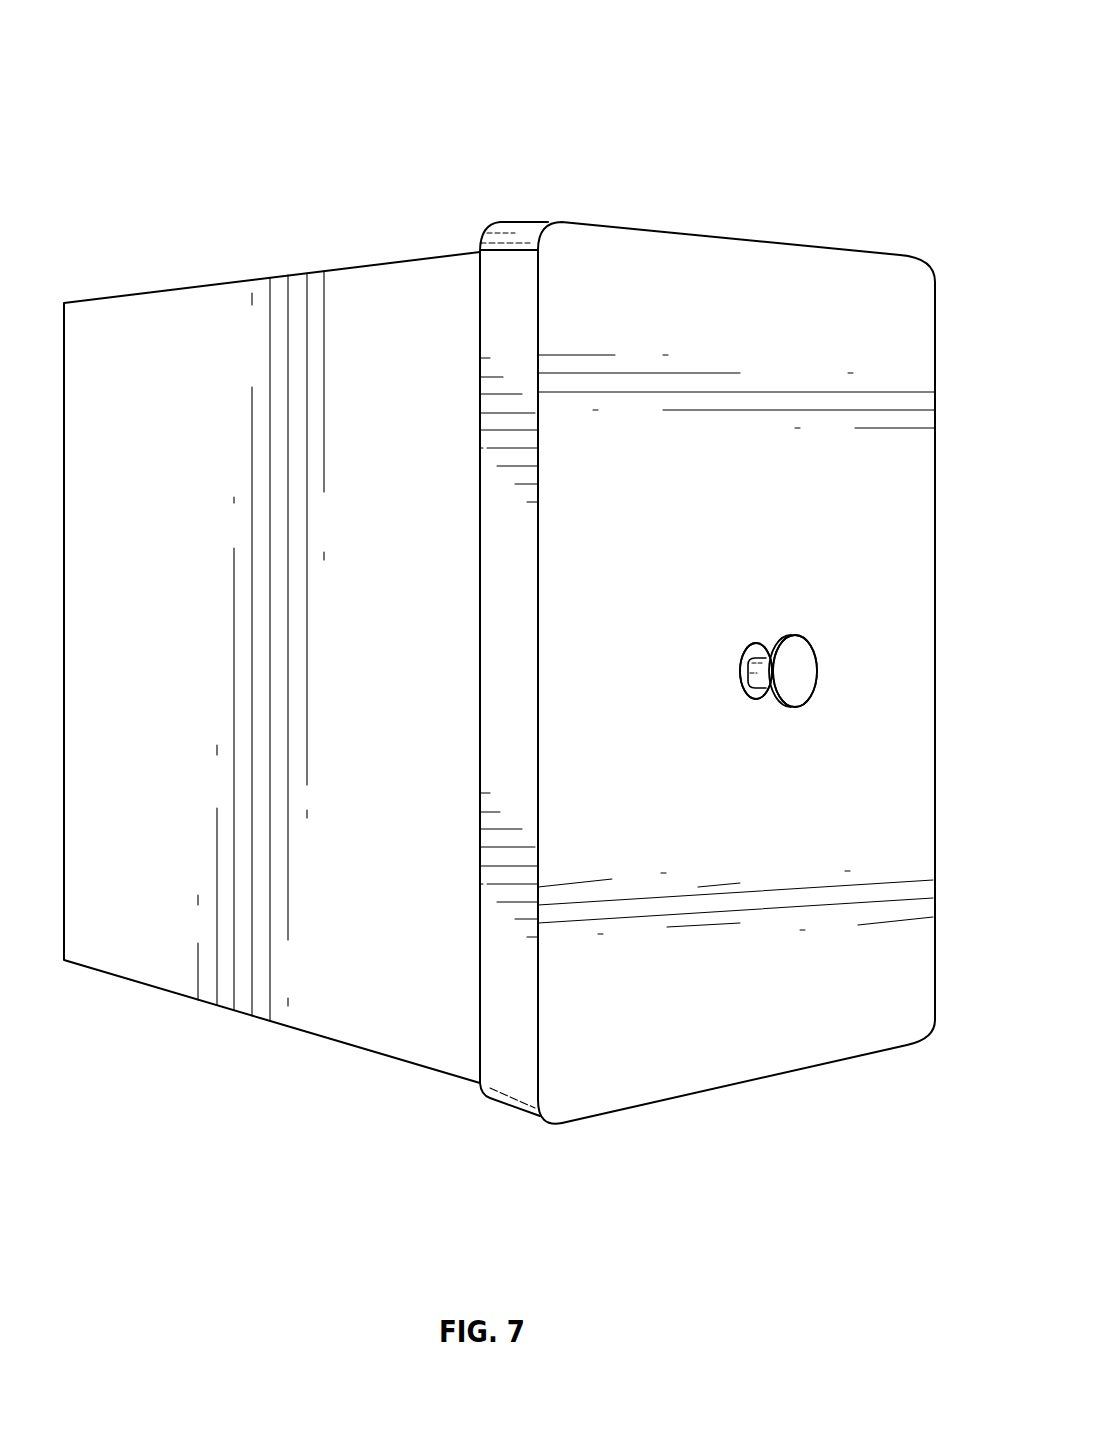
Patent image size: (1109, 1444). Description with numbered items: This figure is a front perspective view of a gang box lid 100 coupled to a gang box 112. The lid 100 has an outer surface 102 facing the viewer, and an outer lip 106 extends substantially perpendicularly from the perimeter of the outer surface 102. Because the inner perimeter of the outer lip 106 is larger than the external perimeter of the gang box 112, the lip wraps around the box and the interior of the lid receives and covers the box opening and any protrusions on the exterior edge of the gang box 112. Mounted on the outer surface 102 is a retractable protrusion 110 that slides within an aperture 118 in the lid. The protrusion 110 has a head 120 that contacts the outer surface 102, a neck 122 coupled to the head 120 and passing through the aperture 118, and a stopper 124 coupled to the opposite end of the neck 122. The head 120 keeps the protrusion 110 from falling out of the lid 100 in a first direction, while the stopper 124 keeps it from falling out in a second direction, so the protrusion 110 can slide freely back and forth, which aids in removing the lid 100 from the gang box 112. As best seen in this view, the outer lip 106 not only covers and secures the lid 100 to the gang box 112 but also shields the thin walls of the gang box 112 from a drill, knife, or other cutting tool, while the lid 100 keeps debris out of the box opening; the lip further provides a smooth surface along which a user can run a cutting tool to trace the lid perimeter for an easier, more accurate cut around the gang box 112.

The gang box lid 100 is at (764, 54).
The outer surface 102 is at (715, 816).
The outer lip 106 is at (508, 1023).
The retractable protrusion 110 is at (798, 615).
The gang box 112 is at (368, 997).
The aperture 118 is at (750, 630).
The head 120 is at (812, 672).
The neck 122 is at (763, 657).
The stopper 124 is at (752, 690).